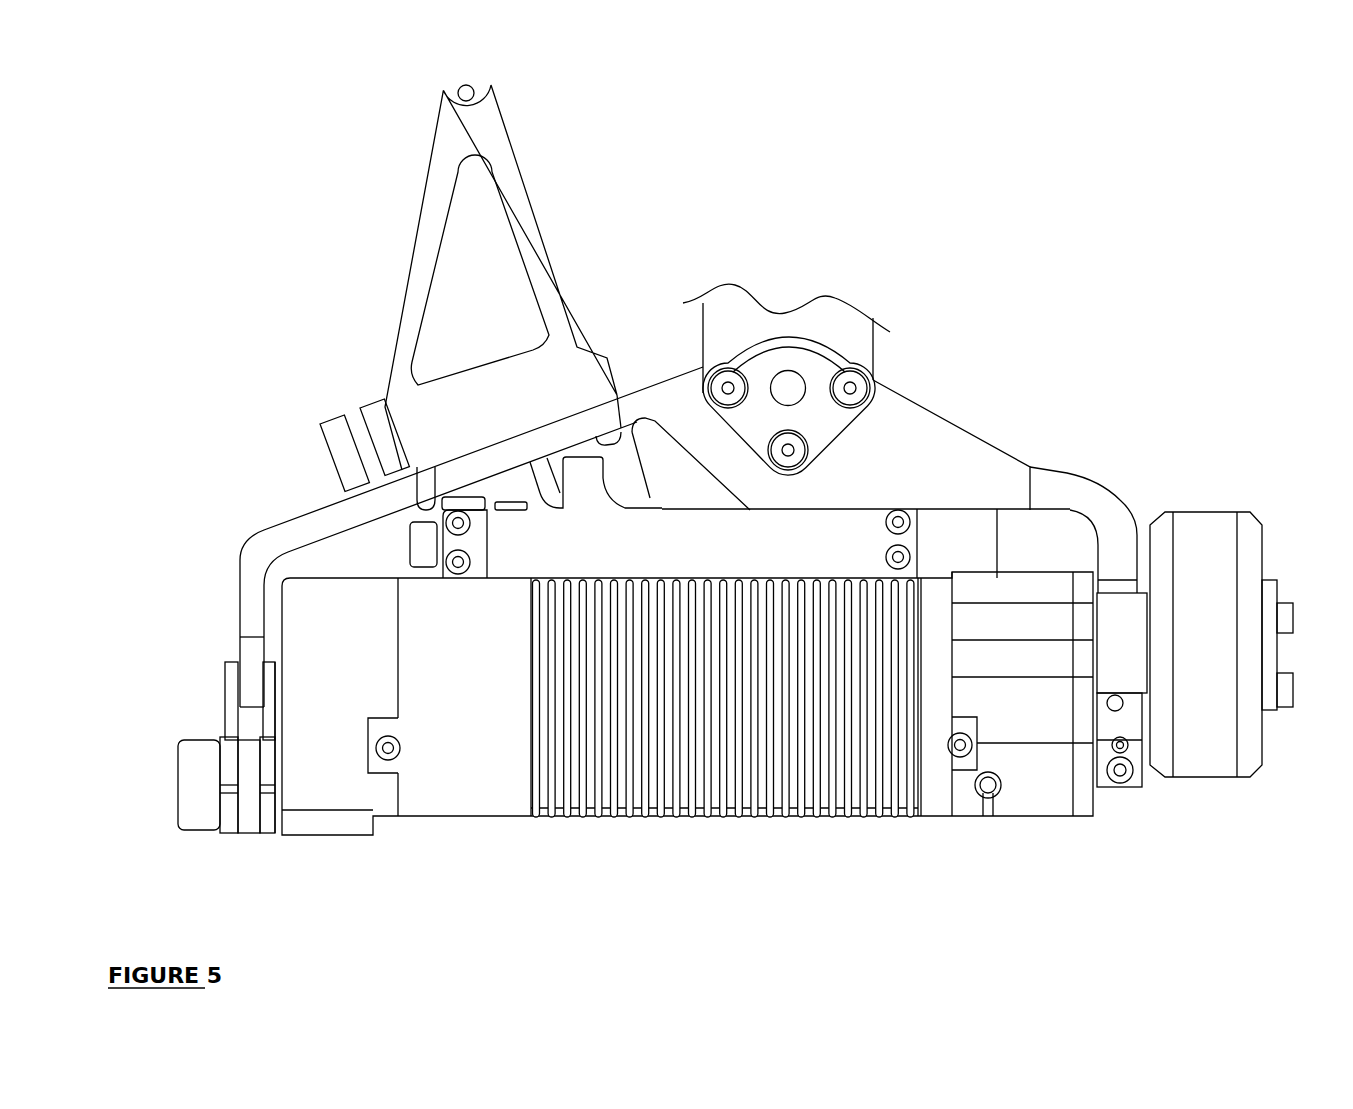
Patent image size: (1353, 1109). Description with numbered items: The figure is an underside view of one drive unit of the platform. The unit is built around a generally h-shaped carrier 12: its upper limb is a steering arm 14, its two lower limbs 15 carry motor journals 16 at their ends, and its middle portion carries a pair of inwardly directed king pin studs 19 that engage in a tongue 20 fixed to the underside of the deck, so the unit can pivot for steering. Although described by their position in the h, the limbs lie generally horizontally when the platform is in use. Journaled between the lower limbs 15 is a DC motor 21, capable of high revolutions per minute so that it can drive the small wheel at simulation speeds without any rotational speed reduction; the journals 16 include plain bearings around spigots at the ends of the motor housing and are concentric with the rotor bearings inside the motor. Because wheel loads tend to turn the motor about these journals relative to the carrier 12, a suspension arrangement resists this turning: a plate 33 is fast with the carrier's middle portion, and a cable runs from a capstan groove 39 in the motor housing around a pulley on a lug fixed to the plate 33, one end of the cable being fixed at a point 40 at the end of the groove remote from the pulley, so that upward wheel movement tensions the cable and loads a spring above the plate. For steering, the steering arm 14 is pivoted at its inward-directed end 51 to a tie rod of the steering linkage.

The carrier 12 is at (944, 395).
The steering arm 14 is at (543, 270).
The lower limbs 15 is at (250, 594).
The motor journals 16 is at (245, 722).
The king pin studs 19 is at (790, 385).
The tongue 20 is at (723, 325).
The DC motor 21 is at (684, 836).
The plate 33 is at (845, 550).
The capstan groove 39 is at (989, 812).
The point 40 is at (1002, 793).
The ends 51 is at (475, 94).